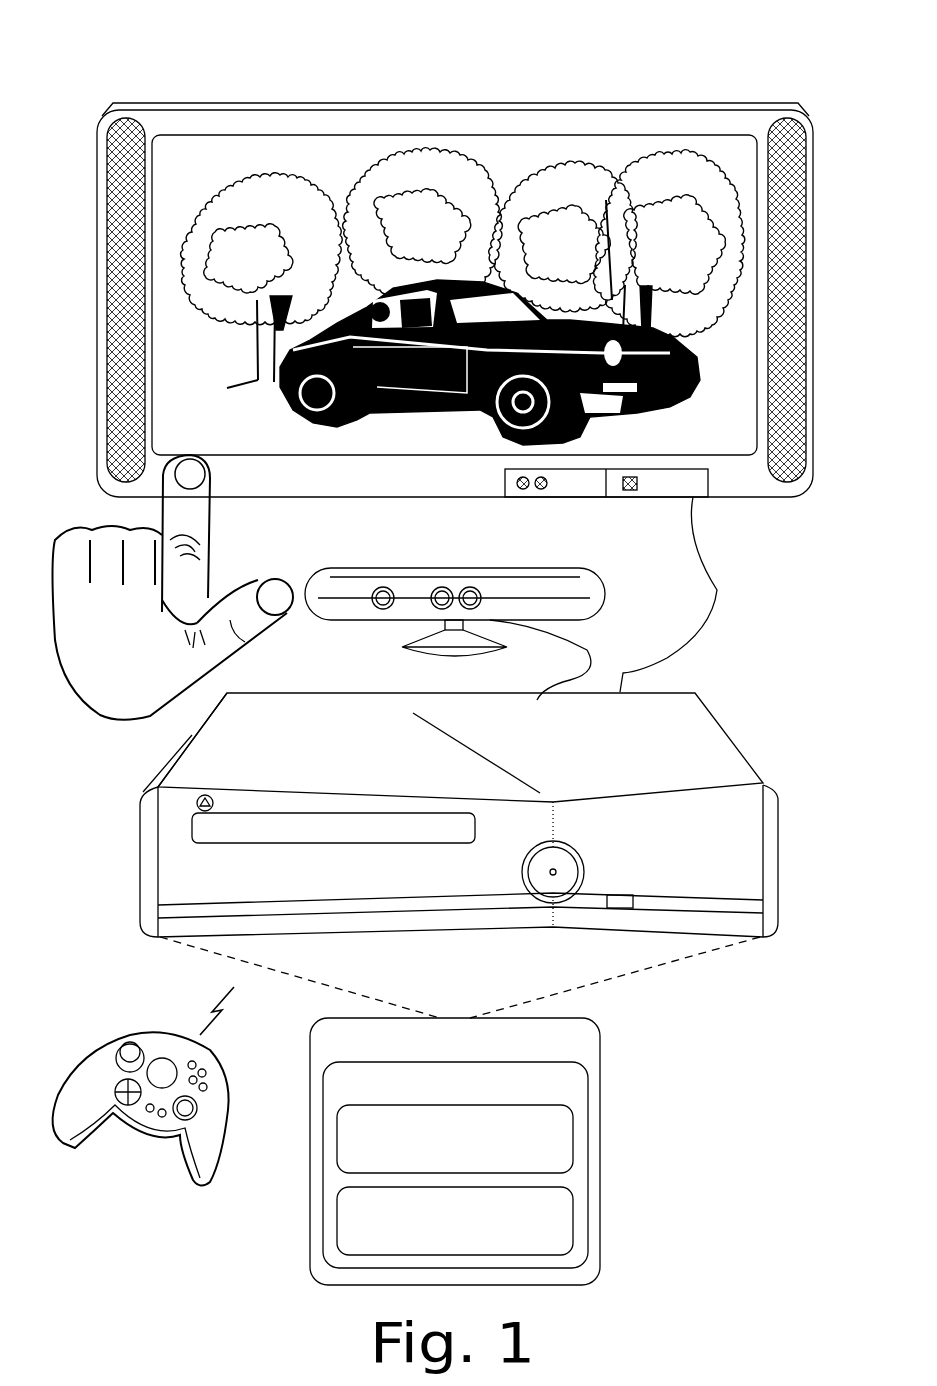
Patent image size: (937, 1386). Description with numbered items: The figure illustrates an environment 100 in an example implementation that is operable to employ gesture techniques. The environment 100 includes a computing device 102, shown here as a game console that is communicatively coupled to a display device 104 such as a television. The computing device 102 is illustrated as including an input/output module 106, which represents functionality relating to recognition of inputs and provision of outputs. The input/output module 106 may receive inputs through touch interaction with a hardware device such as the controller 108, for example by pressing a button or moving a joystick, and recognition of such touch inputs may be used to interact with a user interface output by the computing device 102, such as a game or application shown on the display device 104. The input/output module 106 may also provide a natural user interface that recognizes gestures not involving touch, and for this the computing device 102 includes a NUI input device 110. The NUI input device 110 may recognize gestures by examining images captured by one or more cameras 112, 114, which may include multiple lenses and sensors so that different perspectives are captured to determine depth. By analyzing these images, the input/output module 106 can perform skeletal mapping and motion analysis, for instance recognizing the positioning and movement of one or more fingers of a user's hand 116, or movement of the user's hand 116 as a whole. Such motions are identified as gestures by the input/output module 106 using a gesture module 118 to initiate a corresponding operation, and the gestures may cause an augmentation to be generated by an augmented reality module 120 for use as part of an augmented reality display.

The environment 100 is at (139, 60).
The computing device 102 is at (459, 989).
The display device 104 is at (205, 166).
The input/output module 106 is at (455, 1165).
The controller 108 is at (138, 1035).
The NUI input device 110 is at (333, 568).
The camera 112 is at (385, 610).
The camera 114 is at (468, 586).
The user's hand 116 is at (139, 678).
The gesture module 118 is at (455, 1139).
The augmented reality module 120 is at (455, 1221).